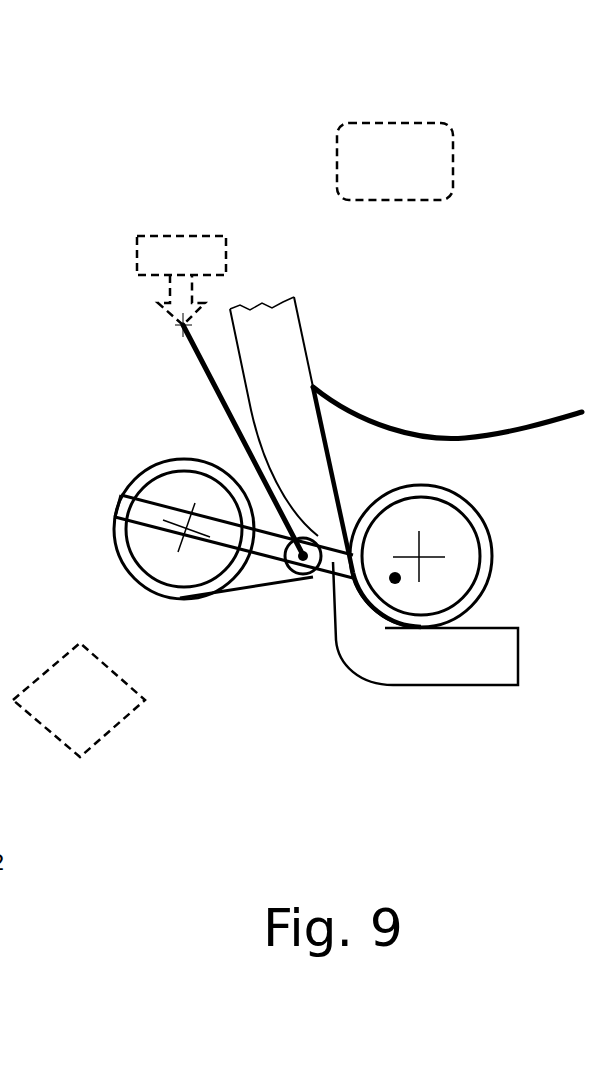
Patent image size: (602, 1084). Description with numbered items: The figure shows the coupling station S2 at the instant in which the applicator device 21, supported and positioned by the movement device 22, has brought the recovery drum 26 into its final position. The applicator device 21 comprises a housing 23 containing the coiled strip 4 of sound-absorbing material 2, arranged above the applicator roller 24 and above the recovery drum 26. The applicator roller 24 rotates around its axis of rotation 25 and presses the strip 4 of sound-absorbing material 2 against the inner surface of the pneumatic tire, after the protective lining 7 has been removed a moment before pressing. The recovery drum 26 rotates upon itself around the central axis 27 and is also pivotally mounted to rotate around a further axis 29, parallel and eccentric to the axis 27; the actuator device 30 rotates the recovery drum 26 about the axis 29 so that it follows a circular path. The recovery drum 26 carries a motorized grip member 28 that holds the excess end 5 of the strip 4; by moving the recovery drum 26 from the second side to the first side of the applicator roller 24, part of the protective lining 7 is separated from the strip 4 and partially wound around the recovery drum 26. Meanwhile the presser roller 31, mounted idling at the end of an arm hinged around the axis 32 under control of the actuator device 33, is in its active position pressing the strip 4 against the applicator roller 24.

The coupling station S2 is at (156, 137).
The sound-absorbing material 2 is at (260, 337).
The strip 4 is at (325, 421).
The excess end 5 is at (482, 704).
The protective lining 7 is at (257, 590).
The applicator device 21 is at (190, 704).
The movement device 22 is at (395, 161).
The housing 23 is at (396, 416).
The applicator roller 24 is at (440, 583).
The axis of rotation 25 is at (420, 556).
The recovery drum 26 is at (133, 480).
The axis of rotation 27 is at (184, 529).
The motorized grip member 28 is at (237, 547).
The axis of rotation 29 is at (395, 584).
The actuator device 30 is at (79, 700).
The presser roller 31 is at (317, 552).
The axis of rotation 32 is at (183, 325).
The actuator device 33 is at (181, 280).